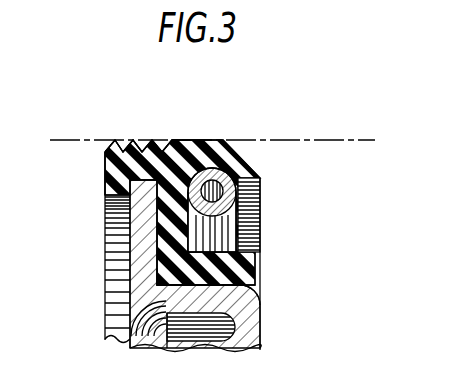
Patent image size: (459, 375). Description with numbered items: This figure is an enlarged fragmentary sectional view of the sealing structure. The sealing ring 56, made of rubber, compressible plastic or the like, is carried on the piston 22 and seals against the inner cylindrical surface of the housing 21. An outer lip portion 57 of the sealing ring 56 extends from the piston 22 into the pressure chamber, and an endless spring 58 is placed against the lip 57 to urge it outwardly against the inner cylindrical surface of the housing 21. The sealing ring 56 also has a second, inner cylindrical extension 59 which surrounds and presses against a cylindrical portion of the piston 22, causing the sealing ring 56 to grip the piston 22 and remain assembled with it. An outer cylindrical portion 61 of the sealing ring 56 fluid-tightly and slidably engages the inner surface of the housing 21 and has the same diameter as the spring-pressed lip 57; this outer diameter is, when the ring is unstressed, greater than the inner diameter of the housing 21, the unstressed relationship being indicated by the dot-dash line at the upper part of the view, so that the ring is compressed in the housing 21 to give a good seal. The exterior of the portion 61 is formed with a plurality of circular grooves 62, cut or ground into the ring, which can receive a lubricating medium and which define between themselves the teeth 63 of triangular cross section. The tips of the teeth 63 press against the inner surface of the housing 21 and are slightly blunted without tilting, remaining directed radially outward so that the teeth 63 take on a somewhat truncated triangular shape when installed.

The housing 21 is at (330, 139).
The piston 22 is at (143, 237).
The sealing ring 56 is at (140, 273).
The outer lip portion 57 is at (232, 162).
The endless spring 58 is at (250, 208).
The inner cylindrical extension 59 is at (241, 272).
The outer cylindrical portion 61 is at (140, 164).
The circular grooves 62 is at (150, 141).
The teeth 63 is at (130, 146).